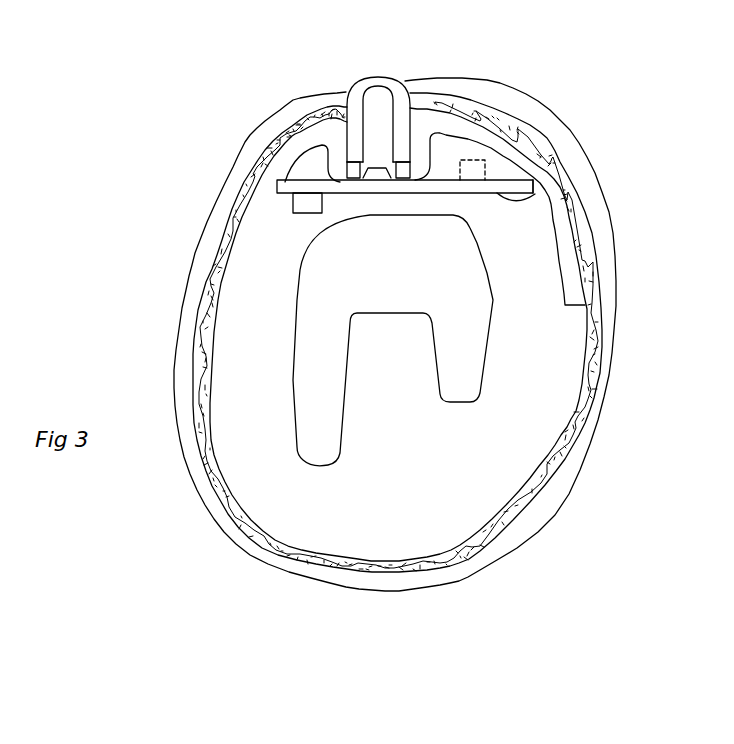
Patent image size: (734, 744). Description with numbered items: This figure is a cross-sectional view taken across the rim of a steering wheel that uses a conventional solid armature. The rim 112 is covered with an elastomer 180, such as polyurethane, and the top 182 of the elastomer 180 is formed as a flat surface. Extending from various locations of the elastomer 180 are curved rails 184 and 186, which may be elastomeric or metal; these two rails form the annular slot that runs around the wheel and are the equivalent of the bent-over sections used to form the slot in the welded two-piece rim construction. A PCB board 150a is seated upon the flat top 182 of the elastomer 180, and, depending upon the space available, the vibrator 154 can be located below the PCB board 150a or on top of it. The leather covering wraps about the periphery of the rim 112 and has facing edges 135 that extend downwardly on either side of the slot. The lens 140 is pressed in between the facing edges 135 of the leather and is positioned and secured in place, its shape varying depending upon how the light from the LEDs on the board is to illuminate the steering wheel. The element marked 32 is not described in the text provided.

The outer shell 32 is at (235, 180).
The curved rail 184 is at (298, 152).
The curved rail 186 is at (505, 153).
The elastomer 180 is at (247, 358).
The facing edges 135 is at (352, 128).
The lens 140 is at (380, 107).
The PCB board 150a is at (290, 190).
The top of the elastomer 182 is at (533, 193).
The vibrator 154 is at (478, 155).
The rim 112 is at (452, 282).